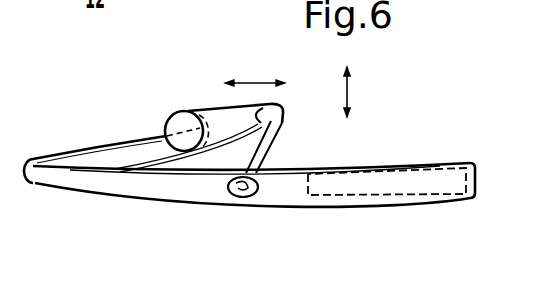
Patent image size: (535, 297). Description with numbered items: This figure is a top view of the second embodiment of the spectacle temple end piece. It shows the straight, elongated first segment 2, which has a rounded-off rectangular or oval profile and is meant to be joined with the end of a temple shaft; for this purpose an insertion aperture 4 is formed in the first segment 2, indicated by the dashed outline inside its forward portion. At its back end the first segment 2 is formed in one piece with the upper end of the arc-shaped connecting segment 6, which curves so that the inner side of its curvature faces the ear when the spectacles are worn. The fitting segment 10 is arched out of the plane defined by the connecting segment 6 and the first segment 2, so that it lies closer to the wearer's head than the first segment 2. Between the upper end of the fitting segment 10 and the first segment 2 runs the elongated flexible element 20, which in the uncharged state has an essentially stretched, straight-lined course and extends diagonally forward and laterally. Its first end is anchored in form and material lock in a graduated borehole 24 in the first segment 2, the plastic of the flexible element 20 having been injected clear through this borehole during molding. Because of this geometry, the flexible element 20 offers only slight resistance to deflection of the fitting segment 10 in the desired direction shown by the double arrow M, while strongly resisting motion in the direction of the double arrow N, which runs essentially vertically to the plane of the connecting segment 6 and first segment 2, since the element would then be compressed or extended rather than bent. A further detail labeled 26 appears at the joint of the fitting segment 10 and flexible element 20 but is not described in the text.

The first segment 2 is at (277, 193).
The insertion aperture 4 is at (383, 183).
The connecting segment 6 is at (83, 143).
The fitting segment 10 is at (193, 105).
The flexible element 20 is at (270, 162).
The graduated borehole 24 is at (233, 202).
The hook end 26 is at (295, 105).
The double arrow M is at (253, 83).
The double arrow N is at (348, 93).